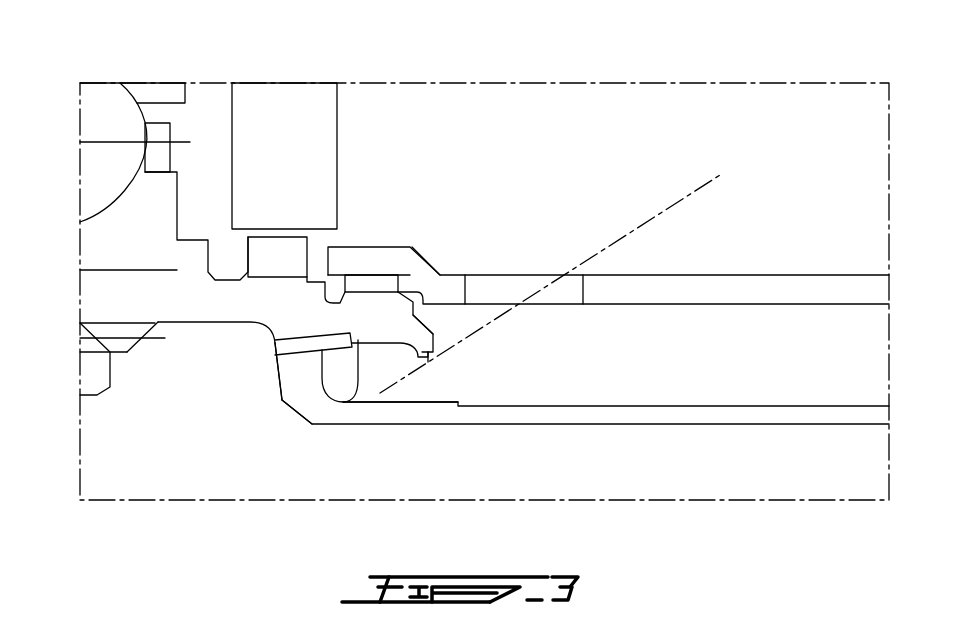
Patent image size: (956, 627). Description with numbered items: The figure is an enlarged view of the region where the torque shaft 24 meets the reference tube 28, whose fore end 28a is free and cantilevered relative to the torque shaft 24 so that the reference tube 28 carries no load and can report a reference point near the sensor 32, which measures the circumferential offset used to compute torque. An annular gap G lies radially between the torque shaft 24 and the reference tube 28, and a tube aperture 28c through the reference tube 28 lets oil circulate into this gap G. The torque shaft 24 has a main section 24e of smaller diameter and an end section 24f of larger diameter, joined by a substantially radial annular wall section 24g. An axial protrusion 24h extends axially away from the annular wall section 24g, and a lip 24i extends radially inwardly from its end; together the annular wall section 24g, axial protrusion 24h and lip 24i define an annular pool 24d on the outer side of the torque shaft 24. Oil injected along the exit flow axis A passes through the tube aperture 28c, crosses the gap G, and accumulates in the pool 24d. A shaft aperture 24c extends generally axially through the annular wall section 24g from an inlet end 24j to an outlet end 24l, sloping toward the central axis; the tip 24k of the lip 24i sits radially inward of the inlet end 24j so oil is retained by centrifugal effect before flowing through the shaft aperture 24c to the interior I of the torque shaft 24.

The torque shaft 24 is at (727, 410).
The shaft aperture 24c is at (298, 348).
The pool 24d is at (390, 354).
The main section 24e is at (425, 410).
The end section 24f is at (123, 292).
The annular wall section 24g is at (303, 378).
The axial protrusion 24h is at (380, 313).
The lip 24i is at (433, 357).
The inlet end 24j is at (358, 340).
The tip 24k is at (428, 362).
The outlet end 24l is at (275, 352).
The reference tube 28 is at (790, 287).
The fore end 28a is at (424, 212).
The tube aperture 28c is at (522, 285).
The sensor 32 is at (295, 127).
The exit flow axis A is at (666, 212).
The annular gap G is at (737, 368).
The interior I is at (195, 394).